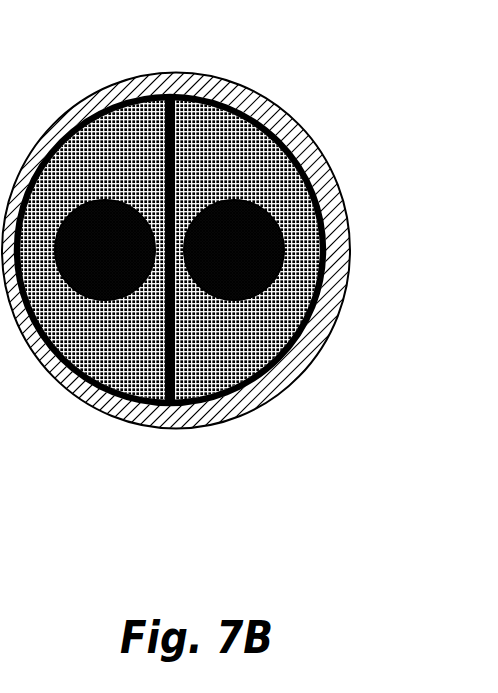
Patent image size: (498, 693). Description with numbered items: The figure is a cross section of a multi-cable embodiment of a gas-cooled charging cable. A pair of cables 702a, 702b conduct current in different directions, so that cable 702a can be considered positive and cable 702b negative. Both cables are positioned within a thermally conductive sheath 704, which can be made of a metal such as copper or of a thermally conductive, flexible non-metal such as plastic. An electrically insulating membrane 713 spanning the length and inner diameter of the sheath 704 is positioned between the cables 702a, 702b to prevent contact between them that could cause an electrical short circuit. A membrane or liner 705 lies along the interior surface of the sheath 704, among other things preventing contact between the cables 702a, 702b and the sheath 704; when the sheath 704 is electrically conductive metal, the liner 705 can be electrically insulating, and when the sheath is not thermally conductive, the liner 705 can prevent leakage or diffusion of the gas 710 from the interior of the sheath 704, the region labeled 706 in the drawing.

The thermally conductive sheath 704 is at (283, 388).
The liner 705 is at (303, 337).
The filler material 706 is at (170, 250).
The gas 710 is at (125, 138).
The electrically insulating membrane 713 is at (178, 137).
The cable 702a is at (105, 250).
The cable 702b is at (234, 250).